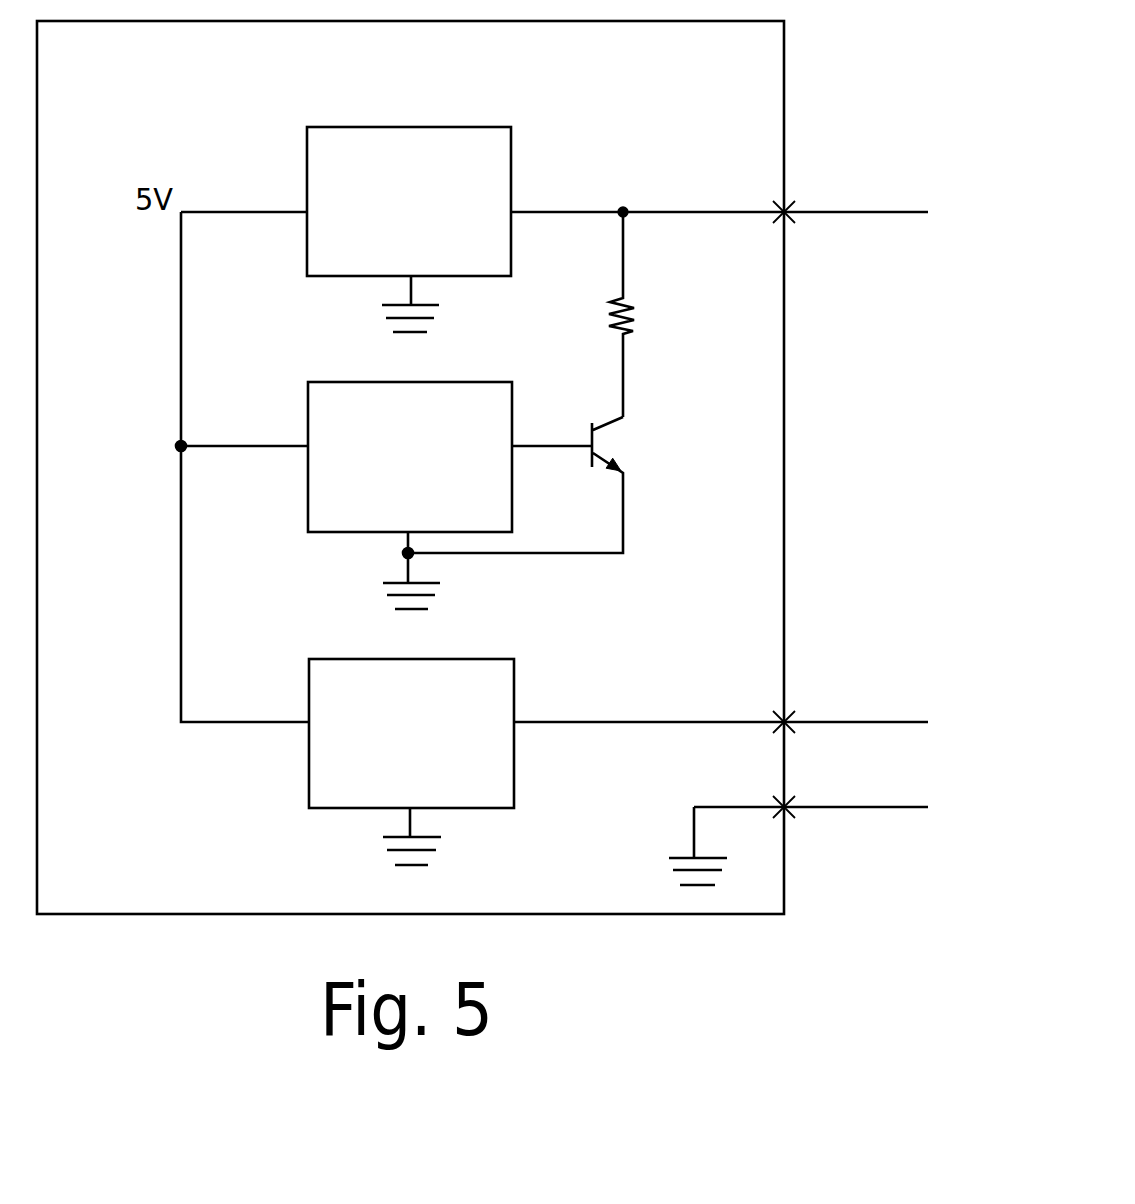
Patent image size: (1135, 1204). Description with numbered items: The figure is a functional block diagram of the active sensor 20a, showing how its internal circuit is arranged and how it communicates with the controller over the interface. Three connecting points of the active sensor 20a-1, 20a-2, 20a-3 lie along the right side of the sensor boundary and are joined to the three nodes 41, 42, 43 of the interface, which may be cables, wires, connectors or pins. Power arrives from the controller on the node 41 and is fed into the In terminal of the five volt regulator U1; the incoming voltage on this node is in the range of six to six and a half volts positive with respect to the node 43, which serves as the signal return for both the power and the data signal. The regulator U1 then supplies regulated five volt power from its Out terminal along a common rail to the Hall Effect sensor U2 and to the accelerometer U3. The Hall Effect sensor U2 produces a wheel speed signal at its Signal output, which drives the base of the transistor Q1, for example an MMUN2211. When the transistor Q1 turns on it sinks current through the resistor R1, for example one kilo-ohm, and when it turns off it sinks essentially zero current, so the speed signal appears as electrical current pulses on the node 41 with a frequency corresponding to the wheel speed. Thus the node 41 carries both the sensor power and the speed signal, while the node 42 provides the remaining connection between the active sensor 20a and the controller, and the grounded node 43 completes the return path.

The active sensor 20a is at (137, 87).
The active sensor connecting point 20a-1 is at (647, 198).
The active sensor connecting point 20a-2 is at (649, 707).
The active sensor connecting point 20a-3 is at (726, 830).
The node 41 is at (815, 211).
The node 42 is at (818, 720).
The node 43 is at (818, 805).
The 5 volt regulator U1 is at (362, 172).
The Hall Effect sensor U2 is at (364, 427).
The accelerometer U3 is at (366, 704).
The resistor R1 is at (653, 314).
The transistor Q1 is at (579, 475).